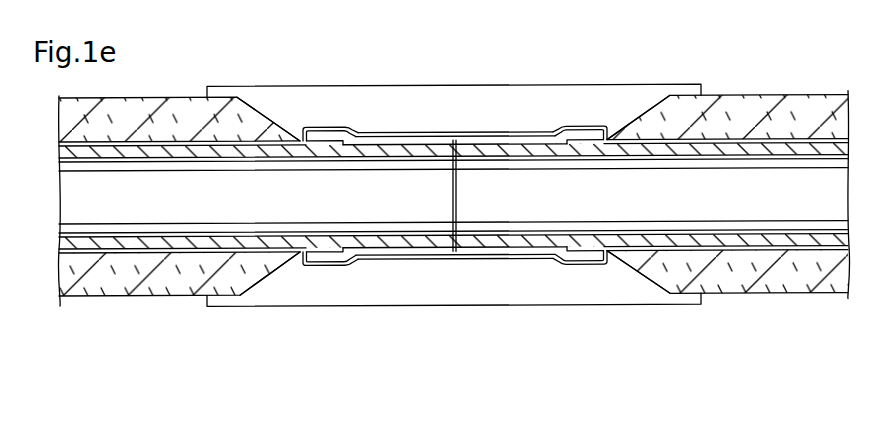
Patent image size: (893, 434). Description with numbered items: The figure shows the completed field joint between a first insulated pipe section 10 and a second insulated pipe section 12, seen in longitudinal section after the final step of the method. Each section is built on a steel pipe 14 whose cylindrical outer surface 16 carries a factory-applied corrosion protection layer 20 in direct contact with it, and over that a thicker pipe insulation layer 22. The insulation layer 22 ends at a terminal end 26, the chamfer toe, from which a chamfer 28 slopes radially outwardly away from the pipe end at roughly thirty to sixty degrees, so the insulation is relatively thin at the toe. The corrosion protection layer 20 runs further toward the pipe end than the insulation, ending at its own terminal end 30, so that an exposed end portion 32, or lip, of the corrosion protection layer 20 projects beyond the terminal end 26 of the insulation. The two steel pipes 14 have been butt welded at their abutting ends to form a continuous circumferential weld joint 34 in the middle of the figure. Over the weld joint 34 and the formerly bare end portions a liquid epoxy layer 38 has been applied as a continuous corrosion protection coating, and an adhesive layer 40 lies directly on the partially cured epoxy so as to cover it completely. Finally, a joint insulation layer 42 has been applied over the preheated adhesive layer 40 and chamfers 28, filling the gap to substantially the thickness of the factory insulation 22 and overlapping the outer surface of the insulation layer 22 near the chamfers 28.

The first insulated pipe section 10 is at (186, 96).
The second insulated pipe section 12 is at (738, 78).
The steel pipe 14 is at (62, 240).
The cylindrical outer surface 16 is at (168, 250).
The corrosion protection layer 20 is at (97, 254).
The pipe insulation layer 22 is at (128, 287).
The terminal end of pipe insulation layer 26 is at (606, 132).
The chamfer 28 is at (638, 127).
The terminal end of corrosion protection layer 30 is at (552, 136).
The exposed end portion of corrosion protection layer 32 is at (318, 132).
The weld joint 34 is at (455, 143).
The liquid epoxy layer 38 is at (507, 262).
The adhesive layer 40 is at (457, 262).
The joint insulation layer 42 is at (364, 93).